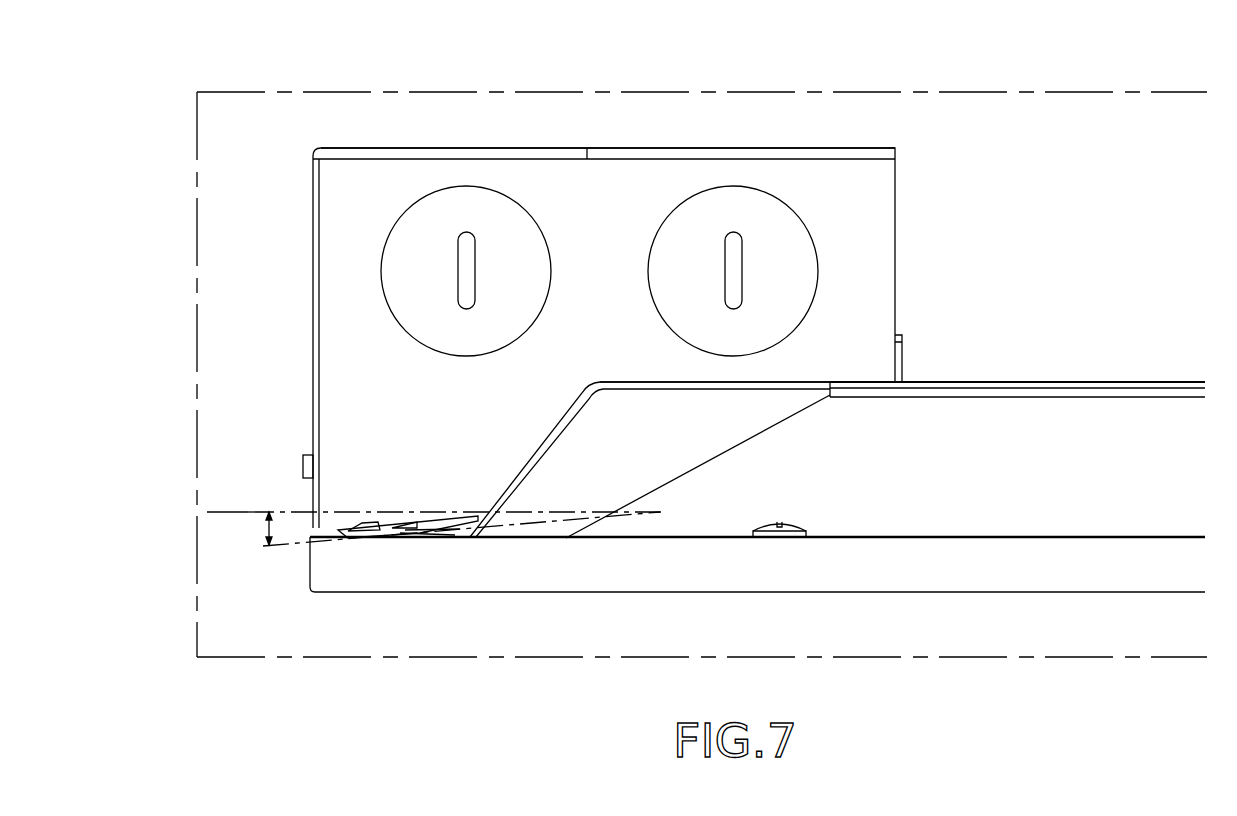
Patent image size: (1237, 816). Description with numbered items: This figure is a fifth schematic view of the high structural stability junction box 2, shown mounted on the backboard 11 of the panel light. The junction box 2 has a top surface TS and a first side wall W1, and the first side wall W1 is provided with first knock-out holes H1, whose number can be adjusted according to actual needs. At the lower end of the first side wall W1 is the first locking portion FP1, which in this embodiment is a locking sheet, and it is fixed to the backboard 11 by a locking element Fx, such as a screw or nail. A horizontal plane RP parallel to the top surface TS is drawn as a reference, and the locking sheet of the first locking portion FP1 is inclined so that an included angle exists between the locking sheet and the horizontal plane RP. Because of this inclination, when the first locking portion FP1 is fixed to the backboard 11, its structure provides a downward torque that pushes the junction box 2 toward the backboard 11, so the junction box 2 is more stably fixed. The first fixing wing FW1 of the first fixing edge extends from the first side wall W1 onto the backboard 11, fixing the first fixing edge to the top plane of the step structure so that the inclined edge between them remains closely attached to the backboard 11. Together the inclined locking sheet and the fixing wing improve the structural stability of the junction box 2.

The junction box 2 is at (634, 380).
The top surface TS is at (682, 148).
The first side wall W1 is at (652, 282).
The first knock-out hole H1 is at (798, 275).
The backboard 11 is at (1050, 408).
The locking element Fx is at (368, 522).
The horizontal plane RP is at (435, 496).
The first locking portion FP1 is at (388, 537).
The first fixing wing FW1 is at (718, 383).